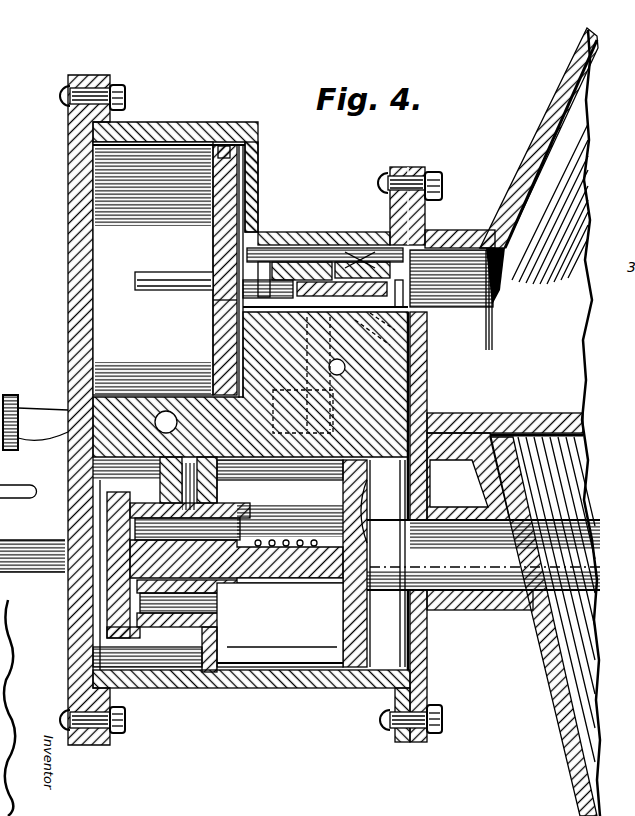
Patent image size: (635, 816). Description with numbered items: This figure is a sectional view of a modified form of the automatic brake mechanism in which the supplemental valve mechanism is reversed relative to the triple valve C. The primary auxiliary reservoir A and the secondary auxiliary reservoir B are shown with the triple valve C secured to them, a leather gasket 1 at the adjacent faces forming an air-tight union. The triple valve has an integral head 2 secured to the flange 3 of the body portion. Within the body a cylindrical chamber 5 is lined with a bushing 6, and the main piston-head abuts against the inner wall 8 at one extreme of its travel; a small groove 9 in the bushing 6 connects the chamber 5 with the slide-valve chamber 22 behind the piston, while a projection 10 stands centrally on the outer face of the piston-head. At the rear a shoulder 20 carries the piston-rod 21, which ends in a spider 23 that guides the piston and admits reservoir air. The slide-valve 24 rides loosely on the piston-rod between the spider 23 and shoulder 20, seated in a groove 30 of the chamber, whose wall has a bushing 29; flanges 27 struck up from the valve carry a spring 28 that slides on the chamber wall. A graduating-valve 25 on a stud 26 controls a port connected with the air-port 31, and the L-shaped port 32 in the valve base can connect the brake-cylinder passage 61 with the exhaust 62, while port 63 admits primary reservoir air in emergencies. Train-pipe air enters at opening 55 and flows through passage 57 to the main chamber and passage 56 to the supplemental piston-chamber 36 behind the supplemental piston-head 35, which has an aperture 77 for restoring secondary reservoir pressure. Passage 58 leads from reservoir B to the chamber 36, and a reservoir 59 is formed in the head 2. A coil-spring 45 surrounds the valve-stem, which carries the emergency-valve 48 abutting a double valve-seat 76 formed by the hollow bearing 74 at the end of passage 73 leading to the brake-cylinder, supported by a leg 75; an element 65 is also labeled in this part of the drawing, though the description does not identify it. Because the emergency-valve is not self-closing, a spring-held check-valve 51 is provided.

The leather gasket 1 is at (415, 168).
The integral head 2 is at (70, 146).
The flange 3 is at (460, 226).
The cylindrical chamber 5 is at (169, 268).
The bushing 6 is at (148, 141).
The inner wall 8 is at (230, 347).
The small groove 9 is at (242, 143).
The projection 10 is at (163, 293).
The shoulder 20 is at (262, 240).
The piston-rod 21 is at (320, 245).
The slide-valve chamber 22 is at (300, 240).
The spider 23 is at (451, 279).
The slide-valve 24 is at (367, 332).
The graduating-valve 25 is at (343, 240).
The stud 26 is at (325, 307).
The flanges 27 is at (315, 373).
The spring 28 is at (372, 242).
The bushing 29 is at (273, 249).
The groove 30 is at (230, 308).
The air-port 31 is at (343, 245).
The L-shaped groove or port 32 is at (303, 385).
The supplemental piston-head 35 is at (347, 607).
The supplemental piston-chamber 36 is at (280, 625).
The coil-spring 45 is at (290, 590).
The emergency-valve 48 is at (118, 602).
The check-valve 51 is at (438, 378).
The opening 55 is at (166, 422).
The passage 56 is at (252, 452).
The passage 57 is at (43, 432).
The passage 58 is at (300, 537).
The reservoir 59 is at (467, 593).
The brake-cylinder passage 61 is at (294, 373).
The exhaust 62 is at (344, 375).
The port 63 is at (382, 323).
The rod 65 is at (133, 618).
The passage 73 is at (218, 483).
The hollow bearing 74 is at (255, 537).
The leg 75 is at (218, 669).
The double valve-seat 76 is at (190, 565).
The aperture 77 is at (347, 505).
The primary auxiliary reservoir A is at (540, 422).
The secondary auxiliary reservoir B is at (543, 625).
The triple valve C is at (311, 160).